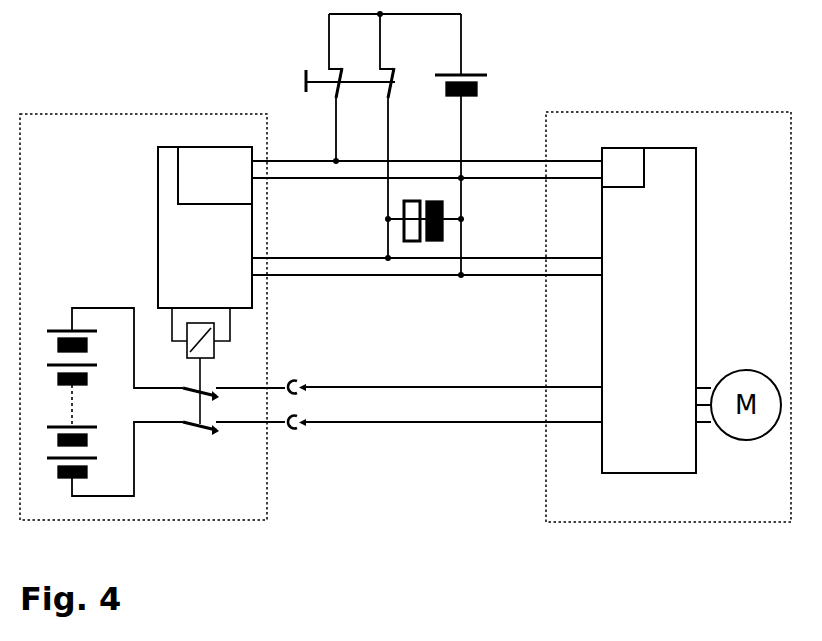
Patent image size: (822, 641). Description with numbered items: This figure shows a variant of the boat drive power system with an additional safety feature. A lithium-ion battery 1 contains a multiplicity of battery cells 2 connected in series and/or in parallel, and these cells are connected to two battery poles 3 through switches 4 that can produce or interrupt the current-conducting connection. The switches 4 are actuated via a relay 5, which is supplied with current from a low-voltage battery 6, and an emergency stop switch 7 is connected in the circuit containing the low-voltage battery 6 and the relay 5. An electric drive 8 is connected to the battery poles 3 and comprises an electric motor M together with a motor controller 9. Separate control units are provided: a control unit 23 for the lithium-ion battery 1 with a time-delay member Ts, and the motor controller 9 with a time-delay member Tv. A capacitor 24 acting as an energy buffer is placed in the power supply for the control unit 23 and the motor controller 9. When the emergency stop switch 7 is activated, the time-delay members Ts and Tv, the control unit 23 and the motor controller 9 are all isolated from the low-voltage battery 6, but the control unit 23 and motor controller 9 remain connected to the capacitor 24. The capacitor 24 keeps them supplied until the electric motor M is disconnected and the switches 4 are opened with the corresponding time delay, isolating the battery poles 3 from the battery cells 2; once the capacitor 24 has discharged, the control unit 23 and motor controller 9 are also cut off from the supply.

The lithium-ion battery 1 is at (143, 337).
The battery cells 2 is at (113, 402).
The battery poles 3 is at (445, 422).
The switches 4 is at (226, 411).
The relay 5 is at (213, 382).
The low-voltage battery 6 is at (467, 146).
The emergency stop switch 7 is at (363, 136).
The electric drive 8 is at (668, 335).
The motor controller 9 is at (649, 310).
The control unit 23 is at (147, 252).
The capacitor 24 is at (423, 230).